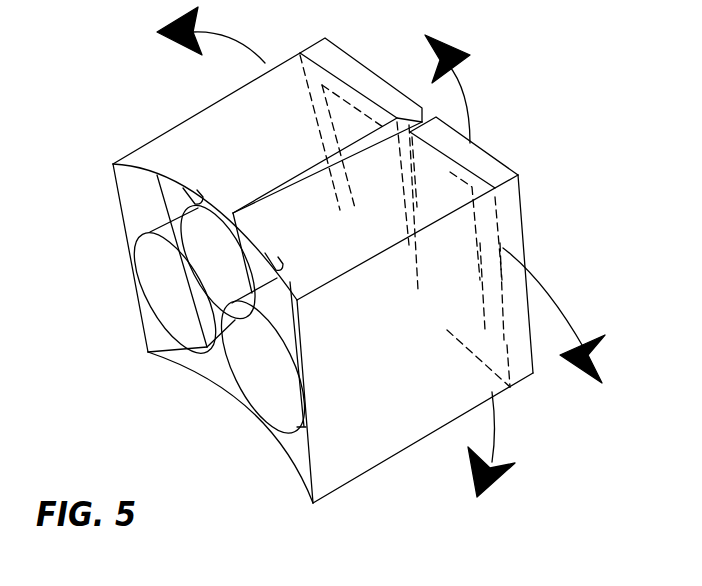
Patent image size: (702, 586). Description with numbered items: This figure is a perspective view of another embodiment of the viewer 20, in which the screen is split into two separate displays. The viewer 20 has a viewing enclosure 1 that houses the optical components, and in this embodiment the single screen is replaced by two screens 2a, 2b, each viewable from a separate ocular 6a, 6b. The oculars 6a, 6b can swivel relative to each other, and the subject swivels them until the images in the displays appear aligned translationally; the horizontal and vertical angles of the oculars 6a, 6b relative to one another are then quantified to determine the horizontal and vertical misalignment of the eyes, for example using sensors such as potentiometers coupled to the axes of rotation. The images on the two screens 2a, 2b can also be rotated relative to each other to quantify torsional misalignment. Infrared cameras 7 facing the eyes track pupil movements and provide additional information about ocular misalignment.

The viewing enclosure 1 is at (353, 482).
The screen 2a is at (365, 62).
The screen 2b is at (492, 153).
The ocular 6a is at (150, 300).
The ocular 6b is at (263, 417).
The infrared cameras 7 is at (268, 258).
The viewer 20 is at (178, 402).